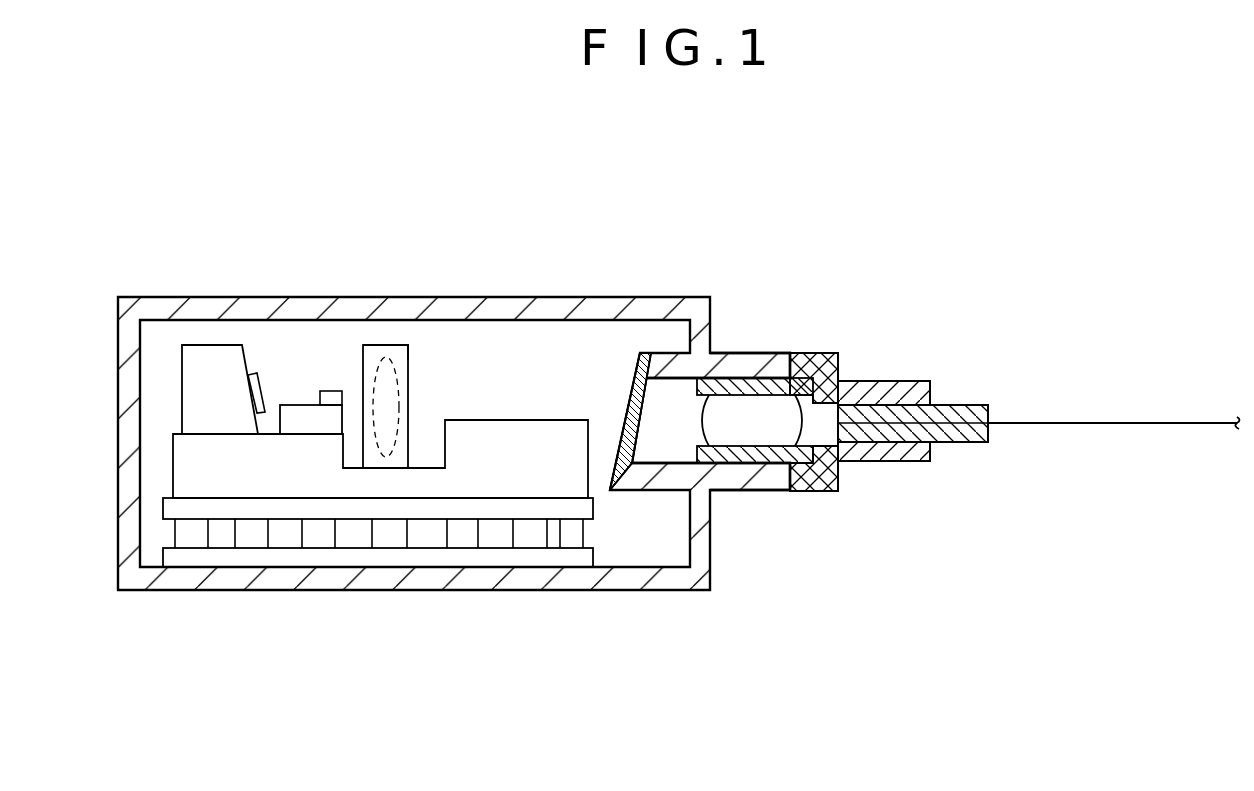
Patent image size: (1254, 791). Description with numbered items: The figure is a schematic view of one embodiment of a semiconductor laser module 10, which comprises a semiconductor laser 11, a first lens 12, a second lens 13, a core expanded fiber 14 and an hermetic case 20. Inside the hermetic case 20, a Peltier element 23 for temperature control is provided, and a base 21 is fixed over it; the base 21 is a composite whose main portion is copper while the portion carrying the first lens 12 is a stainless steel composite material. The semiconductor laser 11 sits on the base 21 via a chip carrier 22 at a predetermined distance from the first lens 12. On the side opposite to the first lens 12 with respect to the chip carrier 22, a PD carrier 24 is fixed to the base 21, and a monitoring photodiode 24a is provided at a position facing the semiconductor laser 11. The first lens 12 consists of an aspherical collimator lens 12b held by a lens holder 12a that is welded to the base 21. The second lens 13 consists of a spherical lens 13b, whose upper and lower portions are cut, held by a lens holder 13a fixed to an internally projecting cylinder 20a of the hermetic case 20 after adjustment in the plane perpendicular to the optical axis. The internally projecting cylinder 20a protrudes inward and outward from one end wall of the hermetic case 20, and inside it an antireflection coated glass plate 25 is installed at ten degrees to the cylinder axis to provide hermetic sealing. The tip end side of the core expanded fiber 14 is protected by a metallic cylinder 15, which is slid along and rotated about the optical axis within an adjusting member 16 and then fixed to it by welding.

The semiconductor laser module 10 is at (688, 163).
The semiconductor laser 11 is at (332, 391).
The first lens 12 is at (391, 343).
The lens holder 12a is at (408, 358).
The collimator lens 12b is at (400, 390).
The second lens 13 is at (757, 467).
The lens holder 13a is at (800, 353).
The spherical lens 13b is at (735, 405).
The core expanded fiber 14 is at (1117, 423).
The metallic cylinder 15 is at (965, 405).
The adjusting member 16 is at (882, 381).
The hermetic case 20 is at (636, 297).
The internally projecting cylinder 20a is at (660, 473).
The base 21 is at (294, 476).
The chip carrier 22 is at (297, 405).
The Peltier element 23 is at (423, 557).
The PD carrier 24 is at (205, 342).
The photodiode 24a is at (262, 374).
The glass plate 25 is at (632, 398).